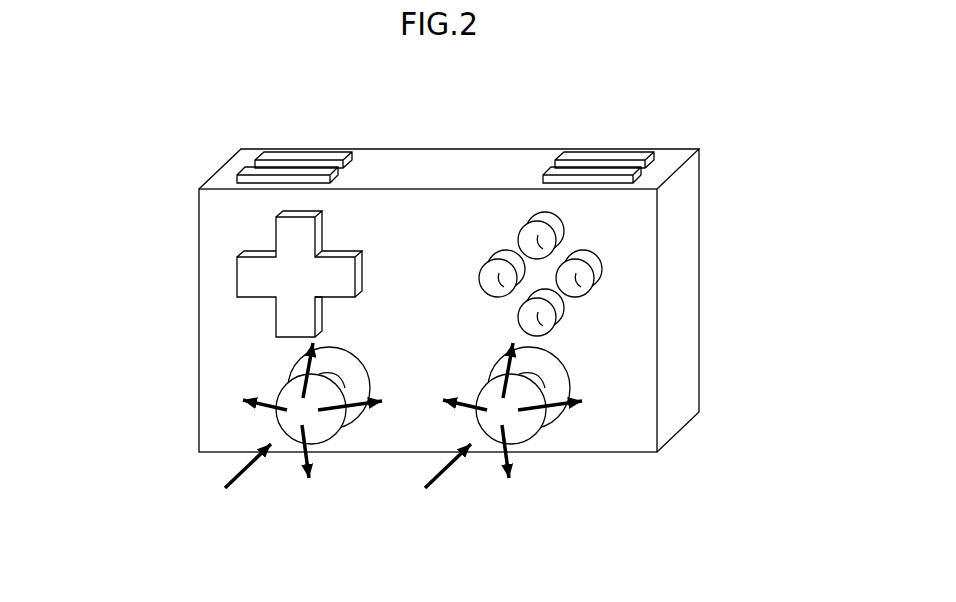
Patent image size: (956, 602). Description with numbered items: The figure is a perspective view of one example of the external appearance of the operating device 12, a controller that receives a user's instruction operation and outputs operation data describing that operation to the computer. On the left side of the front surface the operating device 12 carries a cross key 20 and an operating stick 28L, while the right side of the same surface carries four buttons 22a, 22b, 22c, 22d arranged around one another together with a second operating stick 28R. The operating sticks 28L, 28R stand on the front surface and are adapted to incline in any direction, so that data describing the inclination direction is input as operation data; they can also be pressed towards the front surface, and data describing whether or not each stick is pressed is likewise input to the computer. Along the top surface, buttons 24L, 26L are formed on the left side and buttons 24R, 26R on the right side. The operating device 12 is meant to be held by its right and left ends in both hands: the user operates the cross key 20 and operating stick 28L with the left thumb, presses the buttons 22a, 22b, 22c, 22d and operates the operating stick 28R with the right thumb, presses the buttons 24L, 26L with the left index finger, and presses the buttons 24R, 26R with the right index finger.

The operating device 12 is at (140, 501).
The cross key 20 is at (260, 275).
The button 22a is at (553, 252).
The button 22b is at (583, 297).
The button 22c is at (540, 333).
The button 22d is at (480, 279).
The button 24L is at (282, 172).
The button 24R is at (593, 170).
The button 26L is at (302, 157).
The button 26R is at (613, 157).
The operating stick 28L is at (318, 432).
The operating stick 28R is at (518, 430).